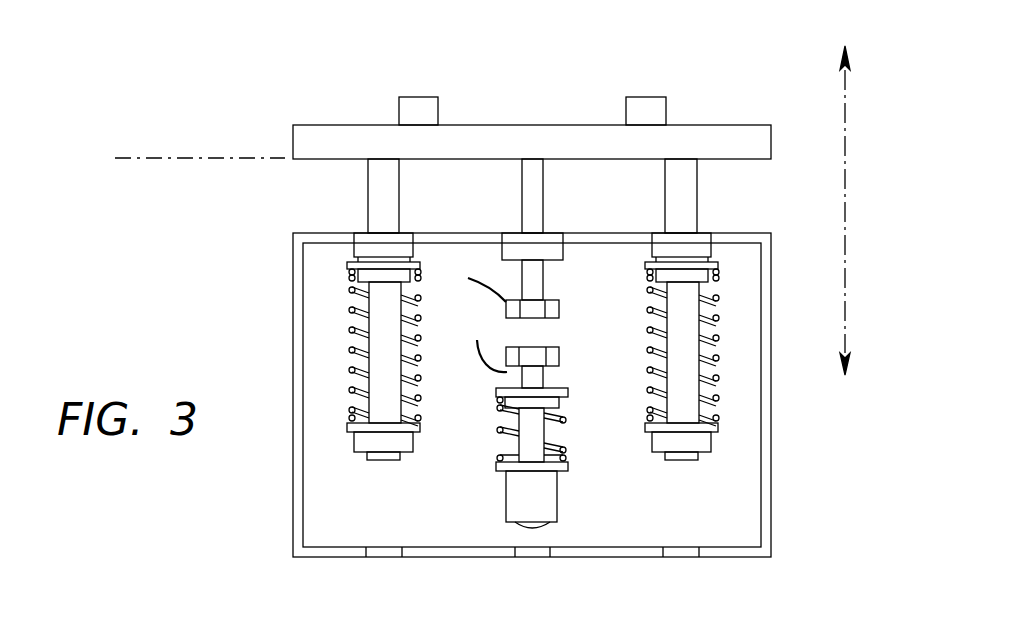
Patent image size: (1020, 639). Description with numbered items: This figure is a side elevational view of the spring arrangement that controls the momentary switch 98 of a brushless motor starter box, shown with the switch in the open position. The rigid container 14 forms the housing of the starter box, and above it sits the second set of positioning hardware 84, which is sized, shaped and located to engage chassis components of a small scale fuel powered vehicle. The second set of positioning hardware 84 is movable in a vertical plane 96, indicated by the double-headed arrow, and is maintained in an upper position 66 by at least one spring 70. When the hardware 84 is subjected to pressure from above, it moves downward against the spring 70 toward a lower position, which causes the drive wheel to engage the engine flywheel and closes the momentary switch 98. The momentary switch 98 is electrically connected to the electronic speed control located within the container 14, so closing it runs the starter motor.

The rigid container 14 is at (771, 498).
The upper position 66 is at (217, 158).
The spring 70 is at (714, 354).
The second set of positioning hardware 84 is at (405, 100).
The vertical plane 96 is at (845, 133).
The momentary switch 98 is at (559, 318).